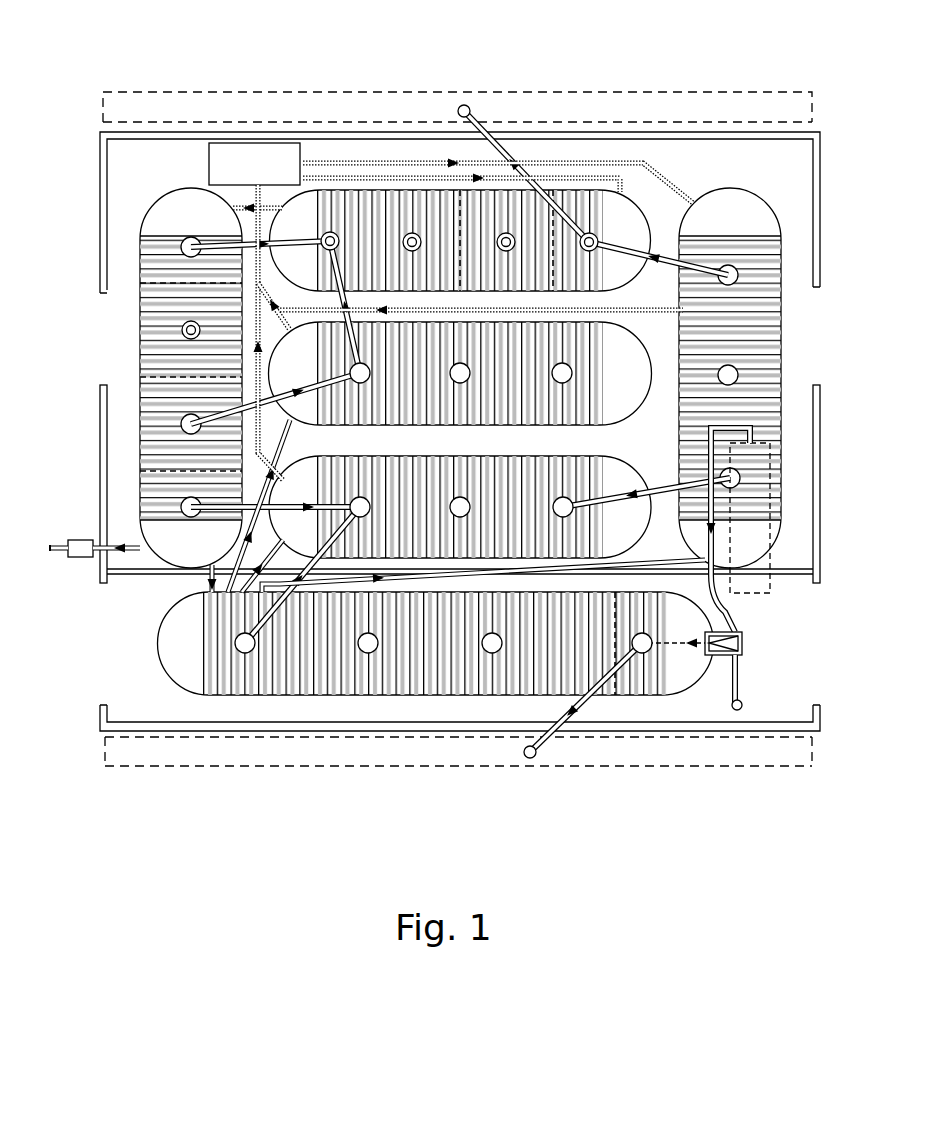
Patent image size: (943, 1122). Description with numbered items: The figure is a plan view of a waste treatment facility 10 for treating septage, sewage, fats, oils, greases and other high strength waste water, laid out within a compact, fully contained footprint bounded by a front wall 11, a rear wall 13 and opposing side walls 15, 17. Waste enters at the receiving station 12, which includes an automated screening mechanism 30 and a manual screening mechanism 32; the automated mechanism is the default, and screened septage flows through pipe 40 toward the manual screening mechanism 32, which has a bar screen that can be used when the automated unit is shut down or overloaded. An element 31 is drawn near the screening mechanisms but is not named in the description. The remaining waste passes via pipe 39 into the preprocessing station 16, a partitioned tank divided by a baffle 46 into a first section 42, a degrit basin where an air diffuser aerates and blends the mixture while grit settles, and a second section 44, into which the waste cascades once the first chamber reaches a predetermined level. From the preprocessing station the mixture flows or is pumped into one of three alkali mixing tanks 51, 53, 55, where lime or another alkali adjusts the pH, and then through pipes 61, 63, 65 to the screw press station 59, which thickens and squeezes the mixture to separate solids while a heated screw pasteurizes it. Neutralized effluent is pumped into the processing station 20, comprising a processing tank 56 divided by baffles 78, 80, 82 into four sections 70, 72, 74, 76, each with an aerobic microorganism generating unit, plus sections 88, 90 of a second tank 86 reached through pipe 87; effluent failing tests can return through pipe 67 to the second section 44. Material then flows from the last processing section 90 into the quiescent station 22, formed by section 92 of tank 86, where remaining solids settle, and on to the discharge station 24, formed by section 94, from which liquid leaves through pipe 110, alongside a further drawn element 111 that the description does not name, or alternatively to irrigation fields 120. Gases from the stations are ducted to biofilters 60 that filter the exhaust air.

The waste treatment facility 10 is at (456, 416).
The front wall 11 is at (818, 526).
The receiving station 12 is at (816, 610).
The rear wall 13 is at (100, 460).
The side wall 15 is at (620, 726).
The preprocessing station 16 is at (500, 688).
The side wall 17 is at (365, 138).
The processing station 20 is at (658, 222).
The quiescent station 22 is at (130, 236).
The discharge station 24 is at (143, 483).
The automated screening mechanism 30 is at (770, 590).
The outlet pipe 31 is at (740, 680).
The manual screening mechanism 32 is at (742, 645).
The pipe 39 is at (690, 648).
The pipe 40 is at (738, 618).
The first section 42 is at (636, 690).
The second section 44 is at (430, 688).
The baffle 46 is at (615, 690).
The alkali mixing tank 51 is at (500, 467).
The alkali mixing tank 53 is at (622, 408).
The alkali mixing tank 55 is at (782, 352).
The processing tank 56 is at (630, 223).
The screw press station 59 is at (283, 147).
The biofilter 60 is at (148, 103).
The pipe 61 is at (262, 450).
The pipe 63 is at (268, 288).
The pipe 65 is at (617, 160).
The pipe 67 is at (205, 590).
The section 70 is at (582, 202).
The section 72 is at (470, 198).
The section 74 is at (422, 210).
The section 76 is at (340, 198).
The baffle 78 is at (557, 227).
The baffle 80 is at (464, 228).
The baffle 82 is at (365, 217).
The tank 86 is at (140, 327).
The pipe 87 is at (238, 206).
The section 88 is at (148, 254).
The section 90 is at (141, 295).
The section 92 is at (145, 390).
The section 94 is at (147, 500).
The pipe 110 is at (93, 560).
The conduit 111 is at (80, 558).
The irrigation fields 120 is at (57, 550).